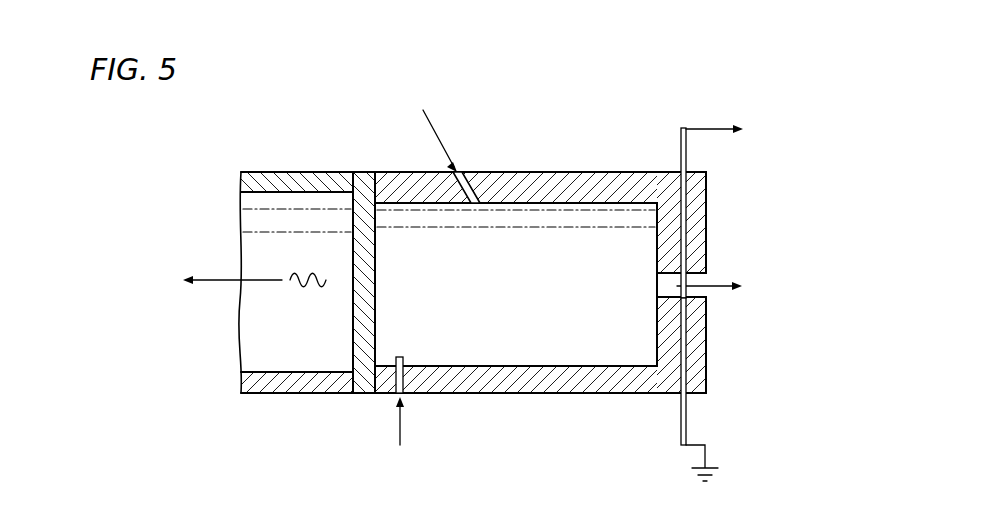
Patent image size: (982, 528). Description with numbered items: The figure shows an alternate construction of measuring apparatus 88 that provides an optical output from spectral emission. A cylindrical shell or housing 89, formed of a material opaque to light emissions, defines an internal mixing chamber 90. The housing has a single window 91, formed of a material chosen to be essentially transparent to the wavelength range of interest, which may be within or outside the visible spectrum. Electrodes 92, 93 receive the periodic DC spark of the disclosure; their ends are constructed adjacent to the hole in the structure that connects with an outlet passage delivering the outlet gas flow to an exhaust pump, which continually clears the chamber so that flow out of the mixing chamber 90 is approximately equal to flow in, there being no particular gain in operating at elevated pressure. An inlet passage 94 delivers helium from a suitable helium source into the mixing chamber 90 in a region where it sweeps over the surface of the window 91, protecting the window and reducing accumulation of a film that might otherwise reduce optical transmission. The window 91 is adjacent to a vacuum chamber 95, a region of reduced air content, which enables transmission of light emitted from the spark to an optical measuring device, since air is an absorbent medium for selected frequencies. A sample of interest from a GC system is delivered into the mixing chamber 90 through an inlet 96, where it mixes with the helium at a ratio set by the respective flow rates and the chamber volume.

The measuring apparatus 88 is at (247, 445).
The cylindrical shell or housing 89 is at (528, 172).
The internal mixing chamber 90 is at (584, 292).
The window 91 is at (376, 286).
The electrode 92 is at (681, 146).
The electrode 93 is at (680, 423).
The inlet passage 94 is at (404, 357).
The vacuum chamber 95 is at (281, 172).
The inlet 96 is at (475, 203).